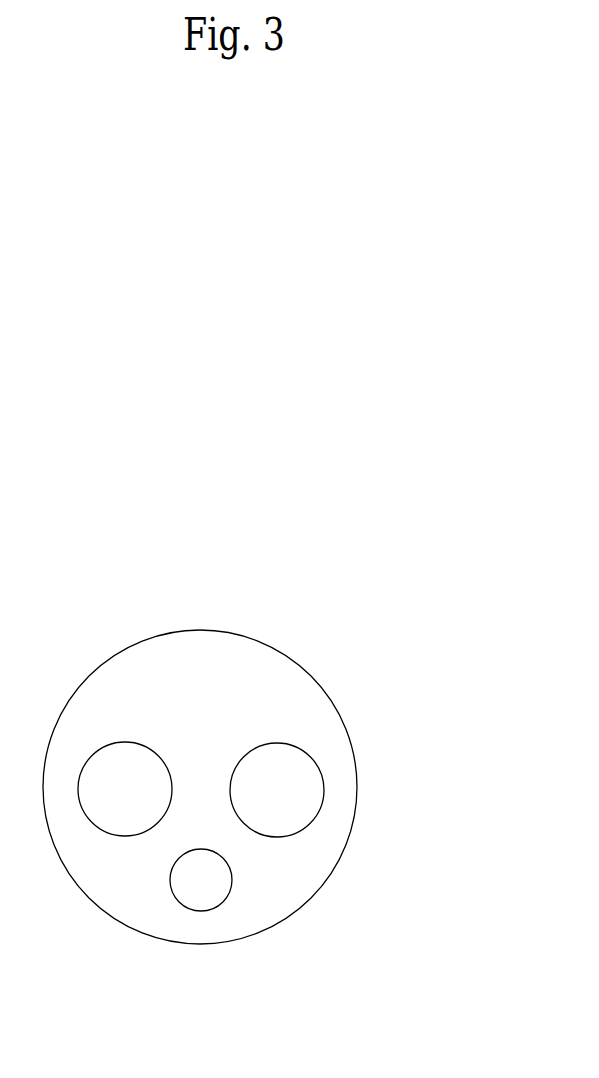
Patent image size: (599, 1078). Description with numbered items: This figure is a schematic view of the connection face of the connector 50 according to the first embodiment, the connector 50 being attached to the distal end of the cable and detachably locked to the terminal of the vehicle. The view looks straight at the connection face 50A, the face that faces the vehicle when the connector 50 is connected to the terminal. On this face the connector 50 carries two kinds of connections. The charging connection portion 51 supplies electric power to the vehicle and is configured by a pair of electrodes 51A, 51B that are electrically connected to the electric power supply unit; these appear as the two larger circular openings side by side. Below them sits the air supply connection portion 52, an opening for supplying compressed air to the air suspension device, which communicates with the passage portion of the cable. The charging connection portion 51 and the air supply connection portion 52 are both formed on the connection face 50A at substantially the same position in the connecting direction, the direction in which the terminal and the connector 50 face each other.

The connector 50 is at (287, 655).
The connection face 50A is at (196, 673).
The charging connection portion 51 is at (448, 668).
The electrode 51A is at (132, 782).
The electrode 51B is at (287, 783).
The air supply connection portion 52 is at (212, 882).